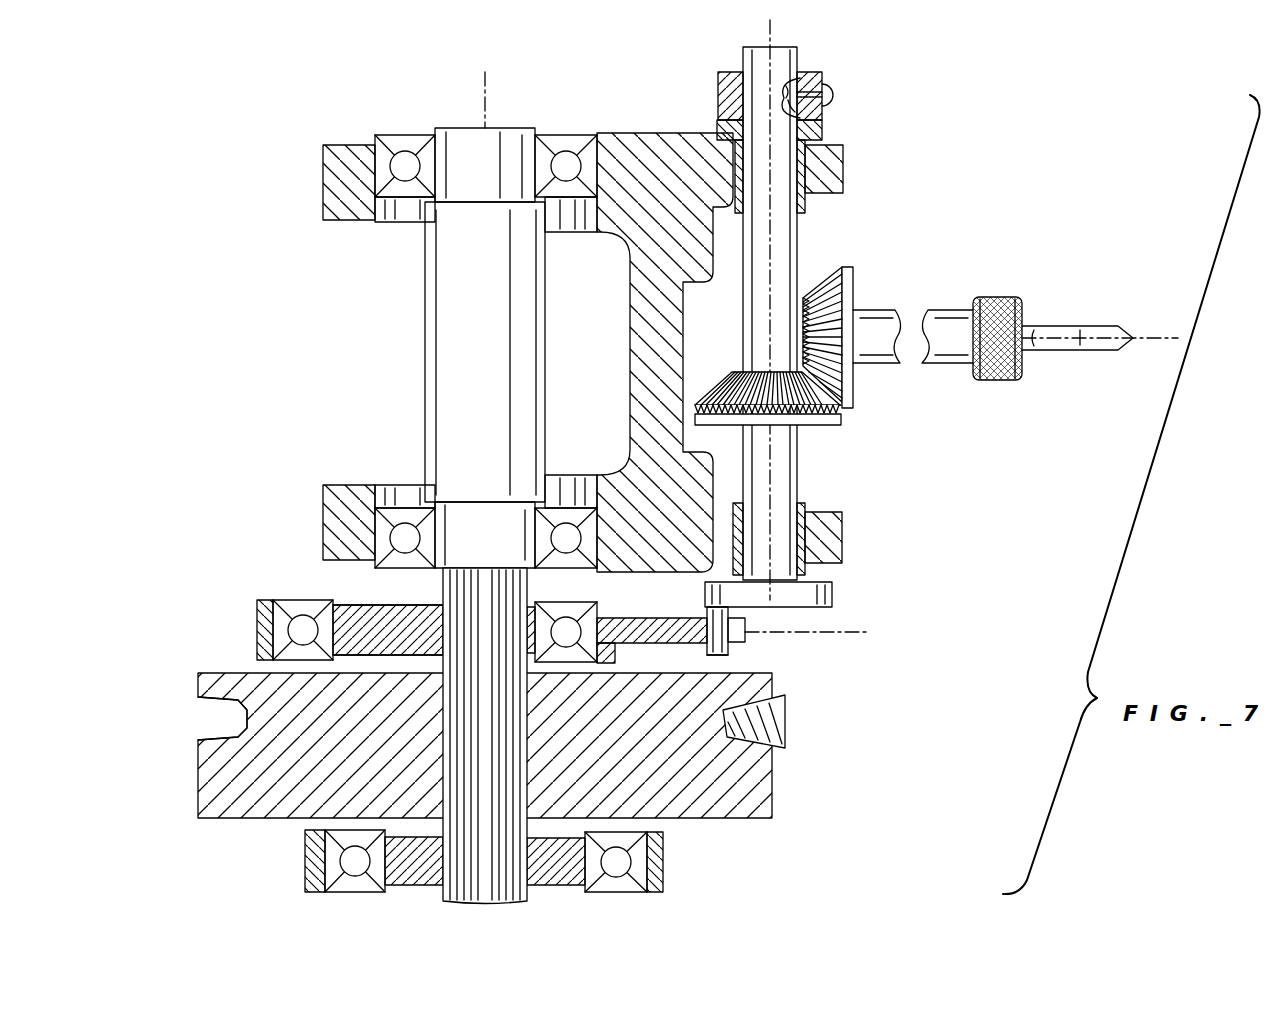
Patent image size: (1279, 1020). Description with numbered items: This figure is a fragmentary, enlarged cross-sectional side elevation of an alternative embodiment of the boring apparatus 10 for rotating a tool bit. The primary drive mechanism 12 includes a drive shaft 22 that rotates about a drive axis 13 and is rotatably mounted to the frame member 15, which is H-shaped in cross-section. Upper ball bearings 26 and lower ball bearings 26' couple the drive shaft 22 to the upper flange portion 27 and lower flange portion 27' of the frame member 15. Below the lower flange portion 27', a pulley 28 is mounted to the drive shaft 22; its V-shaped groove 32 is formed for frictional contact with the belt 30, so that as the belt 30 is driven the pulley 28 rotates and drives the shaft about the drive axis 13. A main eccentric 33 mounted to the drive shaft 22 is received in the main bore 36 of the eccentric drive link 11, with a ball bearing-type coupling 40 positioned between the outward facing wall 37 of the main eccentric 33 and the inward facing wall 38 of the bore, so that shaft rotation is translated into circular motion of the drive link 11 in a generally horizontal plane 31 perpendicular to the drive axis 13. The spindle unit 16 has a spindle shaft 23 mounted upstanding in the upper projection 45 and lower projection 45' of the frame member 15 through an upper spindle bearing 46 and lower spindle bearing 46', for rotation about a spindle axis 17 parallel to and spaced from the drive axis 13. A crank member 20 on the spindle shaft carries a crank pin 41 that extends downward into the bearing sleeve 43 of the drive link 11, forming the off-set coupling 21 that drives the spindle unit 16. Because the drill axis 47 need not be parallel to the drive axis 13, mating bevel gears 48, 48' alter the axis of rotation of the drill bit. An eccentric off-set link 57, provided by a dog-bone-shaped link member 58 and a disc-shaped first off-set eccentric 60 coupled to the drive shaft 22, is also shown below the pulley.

The apparatus 10 is at (291, 272).
The eccentric drive link 11 is at (270, 600).
The primary drive mechanism 12 is at (165, 777).
The drive axis 13 is at (485, 85).
The frame member 15 is at (655, 134).
The spindle unit 16 is at (818, 222).
The spindle axis 17 is at (770, 495).
The crank member 20 is at (832, 592).
The off-set coupling 21 is at (800, 667).
The drive shaft 22 is at (480, 904).
The spindle shaft 23 is at (800, 252).
The upper ball bearings 26 is at (468, 166).
The lower ball bearings 26' is at (471, 509).
The upper flange portion 27 is at (319, 182).
The lower flange portion 27' is at (332, 505).
The pulley 28 is at (740, 820).
The belt 30 is at (790, 718).
The horizontal plane 31 is at (825, 632).
The V-shaped groove 32 is at (215, 740).
The main eccentric 33 is at (365, 605).
The main bore 36 is at (440, 612).
The outward facing wall 37 is at (257, 613).
The inward facing wall 38 is at (360, 612).
The ball bearing-type coupling 40 is at (295, 600).
The crank pin 41 is at (735, 660).
The bearing sleeve 43 is at (738, 650).
The upper projection 45 is at (856, 167).
The lower projection 45' is at (859, 535).
The upper spindle bearing 46 is at (803, 106).
The lower spindle bearing 46' is at (822, 539).
The drill axis 47 is at (1170, 338).
The bevel gear 48 is at (790, 413).
The mating bevel gear 48' is at (865, 334).
The eccentric off-set link 57 is at (287, 868).
The dog-bone-shaped link member 58 is at (665, 862).
The first off-set eccentric 60 is at (565, 888).